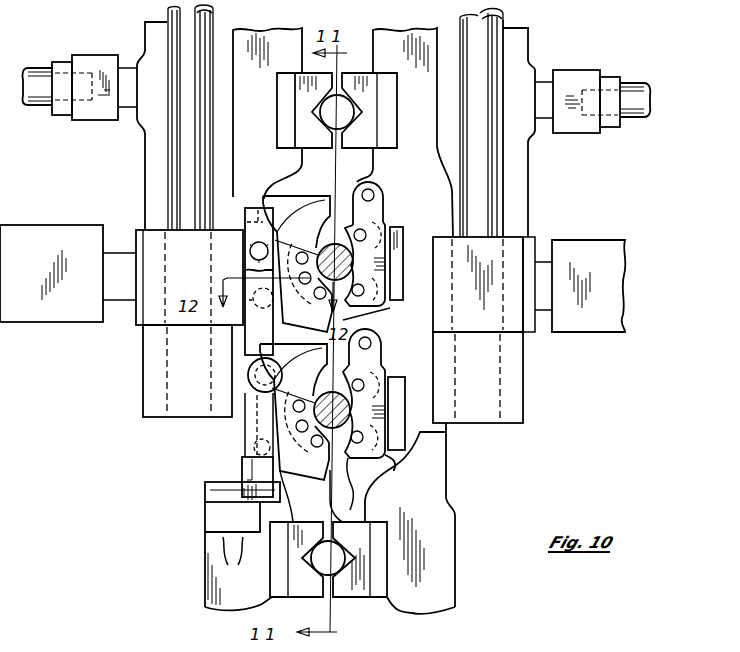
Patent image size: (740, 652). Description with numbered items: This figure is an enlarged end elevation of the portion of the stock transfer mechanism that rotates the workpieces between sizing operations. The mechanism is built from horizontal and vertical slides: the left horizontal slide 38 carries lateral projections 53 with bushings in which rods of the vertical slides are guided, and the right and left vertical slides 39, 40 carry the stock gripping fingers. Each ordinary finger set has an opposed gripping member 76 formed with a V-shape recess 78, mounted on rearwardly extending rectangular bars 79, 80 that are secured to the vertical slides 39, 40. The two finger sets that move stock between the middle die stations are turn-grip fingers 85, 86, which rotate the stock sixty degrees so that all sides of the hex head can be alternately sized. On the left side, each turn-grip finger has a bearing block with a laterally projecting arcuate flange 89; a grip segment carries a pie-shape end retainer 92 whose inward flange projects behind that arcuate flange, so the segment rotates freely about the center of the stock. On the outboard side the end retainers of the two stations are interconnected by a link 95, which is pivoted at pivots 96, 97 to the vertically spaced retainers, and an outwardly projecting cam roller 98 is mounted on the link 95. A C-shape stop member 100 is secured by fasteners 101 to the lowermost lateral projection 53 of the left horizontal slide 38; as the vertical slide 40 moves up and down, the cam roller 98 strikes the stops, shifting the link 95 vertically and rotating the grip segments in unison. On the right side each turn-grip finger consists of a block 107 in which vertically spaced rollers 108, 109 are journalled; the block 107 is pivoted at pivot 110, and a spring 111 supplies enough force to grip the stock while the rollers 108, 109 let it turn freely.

The left horizontal slide 38 is at (153, 173).
The right vertical slide 39 is at (403, 33).
The left vertical slide 40 is at (279, 33).
The lateral projection 53 is at (180, 231).
The gripping member 76 is at (298, 92).
The V-shape recess 78 is at (314, 118).
The rectangular bar 79 is at (390, 127).
The rectangular bar 80 is at (282, 133).
The turn-grip finger 85 is at (412, 183).
The turn-grip finger 86 is at (420, 430).
The arcuate flange 89 is at (313, 198).
The pie-shape end retainer 92 is at (297, 472).
The link 95 is at (243, 429).
The pivot 96 is at (228, 278).
The pivot 97 is at (250, 452).
The cam roller 98 is at (248, 377).
The C-shape stop member 100 is at (257, 232).
The fastener 101 is at (250, 249).
The block 107 is at (393, 464).
The roller 108 is at (385, 357).
The roller 109 is at (352, 462).
The pivot 110 is at (383, 336).
The spring 111 is at (391, 407).